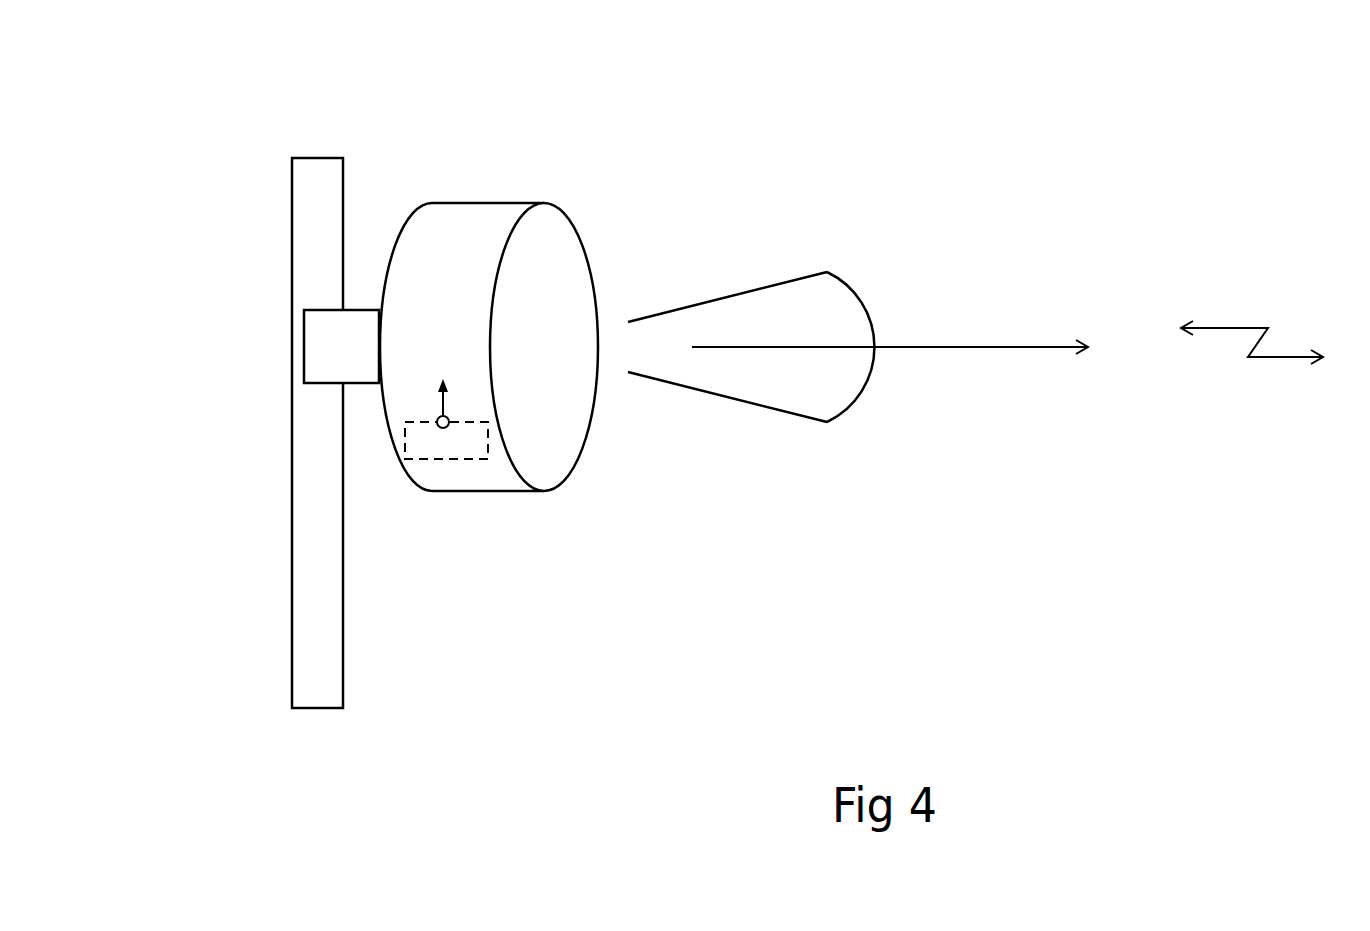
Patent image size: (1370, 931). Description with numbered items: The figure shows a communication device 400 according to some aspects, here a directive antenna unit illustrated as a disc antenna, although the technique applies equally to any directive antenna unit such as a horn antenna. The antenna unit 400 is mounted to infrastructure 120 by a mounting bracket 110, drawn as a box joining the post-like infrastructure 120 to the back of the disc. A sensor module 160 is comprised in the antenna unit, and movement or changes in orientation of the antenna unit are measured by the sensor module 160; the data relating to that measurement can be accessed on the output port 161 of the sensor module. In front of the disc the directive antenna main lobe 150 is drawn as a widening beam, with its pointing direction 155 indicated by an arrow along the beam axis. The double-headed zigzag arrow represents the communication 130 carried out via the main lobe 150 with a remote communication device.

The infrastructure 120 is at (317, 158).
The mounting bracket 110 is at (303, 350).
The communication device 400 is at (541, 178).
The sensor module 160 is at (447, 460).
The output port 161 is at (421, 403).
The directive antenna main lobe 150 is at (854, 215).
The pointing direction 155 is at (890, 328).
The communication 130 is at (1252, 326).